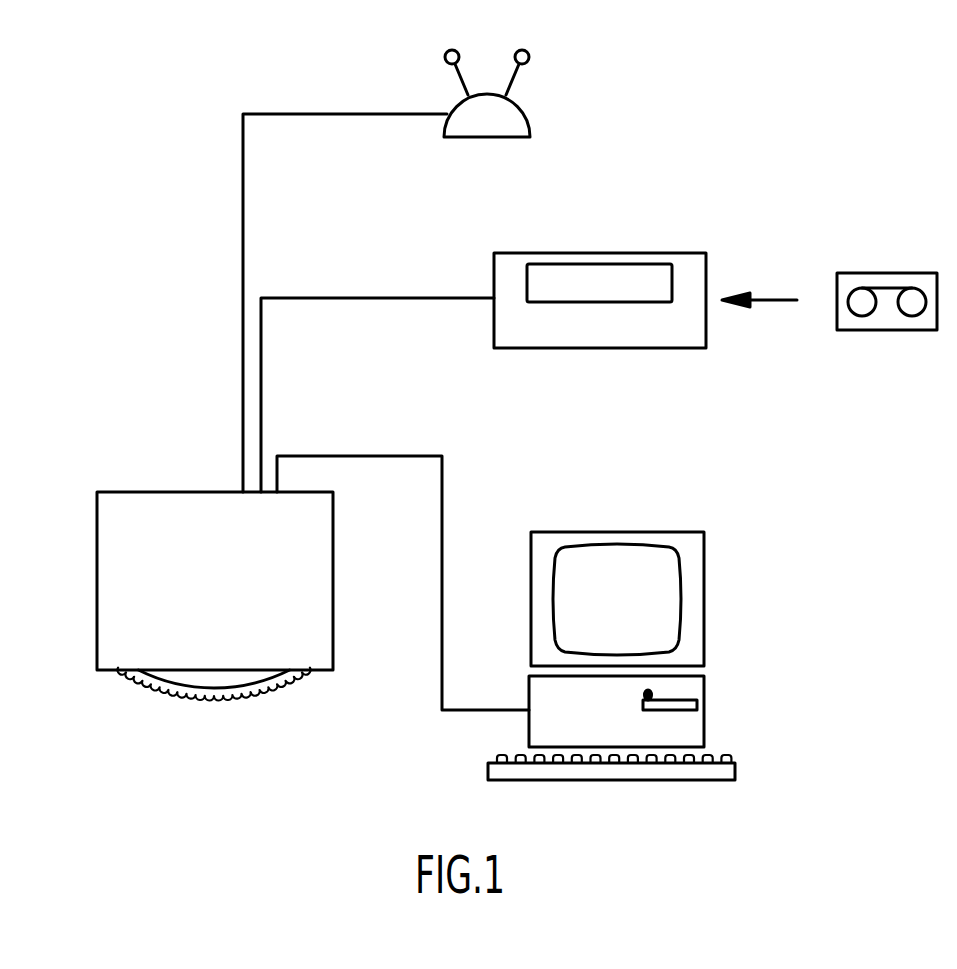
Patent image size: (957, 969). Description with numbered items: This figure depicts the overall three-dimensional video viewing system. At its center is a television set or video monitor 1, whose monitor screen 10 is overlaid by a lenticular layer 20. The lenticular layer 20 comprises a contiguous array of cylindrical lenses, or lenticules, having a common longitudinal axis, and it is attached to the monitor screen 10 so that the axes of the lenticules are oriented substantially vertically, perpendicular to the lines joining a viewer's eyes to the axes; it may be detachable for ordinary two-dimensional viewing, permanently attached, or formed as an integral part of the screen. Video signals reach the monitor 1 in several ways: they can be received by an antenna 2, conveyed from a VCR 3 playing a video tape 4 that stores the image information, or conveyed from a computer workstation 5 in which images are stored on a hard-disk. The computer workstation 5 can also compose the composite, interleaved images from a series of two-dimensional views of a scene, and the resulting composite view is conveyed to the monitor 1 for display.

The monitor 1 is at (123, 506).
The antenna 2 is at (495, 128).
The VCR 3 is at (668, 334).
The video tape 4 is at (888, 325).
The computer workstation 5 is at (693, 688).
The monitor screen 10 is at (247, 677).
The lenticular layer 20 is at (167, 697).